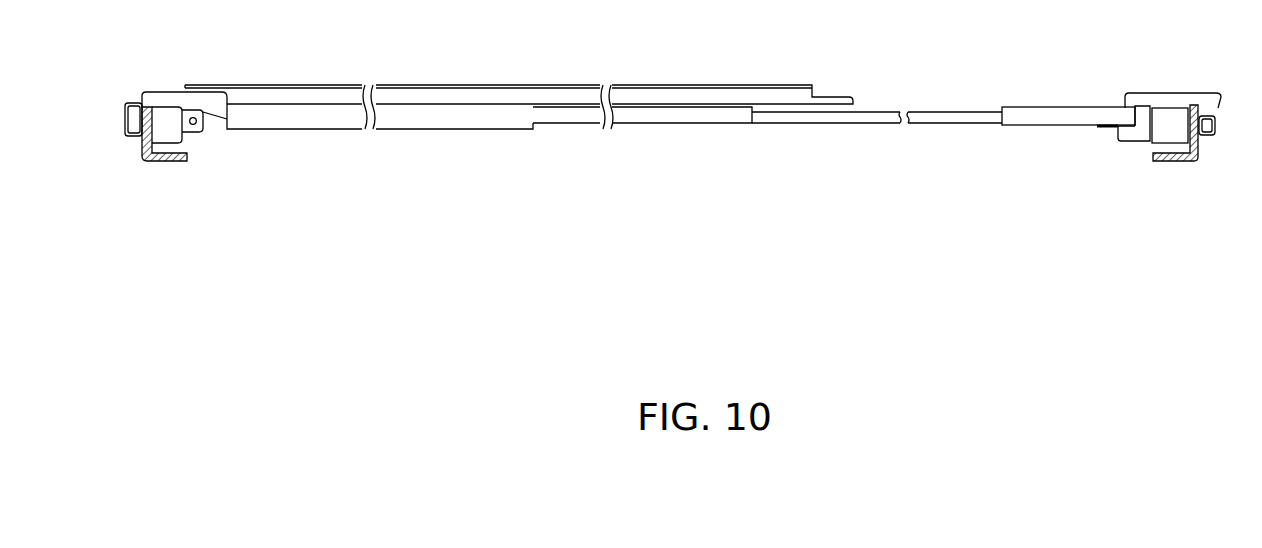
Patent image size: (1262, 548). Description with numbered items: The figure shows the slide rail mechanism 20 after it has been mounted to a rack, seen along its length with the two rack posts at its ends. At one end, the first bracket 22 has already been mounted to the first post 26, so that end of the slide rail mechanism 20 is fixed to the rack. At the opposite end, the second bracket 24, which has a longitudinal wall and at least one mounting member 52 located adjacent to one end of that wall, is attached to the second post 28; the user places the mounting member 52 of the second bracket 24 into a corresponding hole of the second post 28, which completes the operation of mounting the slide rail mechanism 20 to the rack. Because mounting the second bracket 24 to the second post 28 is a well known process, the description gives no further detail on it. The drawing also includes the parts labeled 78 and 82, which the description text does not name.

The slide rail mechanism 20 is at (590, 72).
The first bracket 22 is at (1072, 106).
The second bracket 24 is at (202, 144).
The first post 26 is at (1168, 161).
The second post 28 is at (157, 161).
The mounting member 52 is at (138, 136).
The rear cap 78 is at (1204, 130).
The rear cover 82 is at (1202, 92).